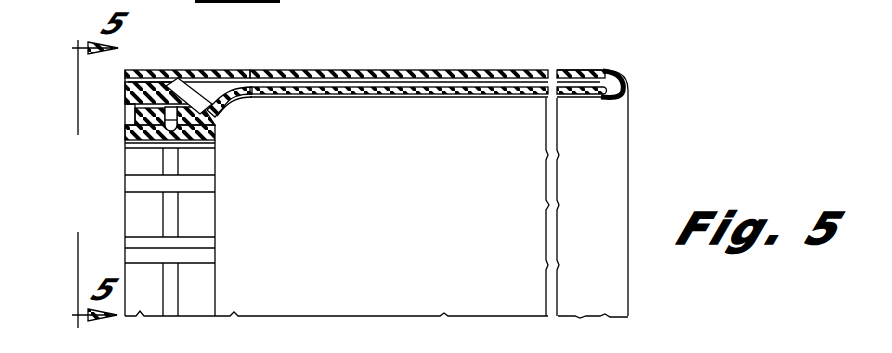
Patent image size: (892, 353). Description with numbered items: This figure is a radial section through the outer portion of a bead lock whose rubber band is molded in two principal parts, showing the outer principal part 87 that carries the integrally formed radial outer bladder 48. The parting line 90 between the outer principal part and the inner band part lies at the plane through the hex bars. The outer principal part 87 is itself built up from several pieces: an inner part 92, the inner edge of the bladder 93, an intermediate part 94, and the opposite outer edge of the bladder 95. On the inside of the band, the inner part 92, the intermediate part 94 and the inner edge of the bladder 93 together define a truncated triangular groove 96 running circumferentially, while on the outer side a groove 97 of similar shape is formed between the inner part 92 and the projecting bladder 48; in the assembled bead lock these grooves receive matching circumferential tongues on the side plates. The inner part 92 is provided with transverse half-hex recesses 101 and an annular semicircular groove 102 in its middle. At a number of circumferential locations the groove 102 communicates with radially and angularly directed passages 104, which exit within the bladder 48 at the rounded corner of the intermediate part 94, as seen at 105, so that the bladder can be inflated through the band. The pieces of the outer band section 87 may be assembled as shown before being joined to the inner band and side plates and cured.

The radial outer bladder 48 is at (423, 60).
The outer principal part 87 is at (164, 58).
The parting line 90 is at (197, 138).
The inner part 92 is at (217, 133).
The inner edge of the bladder 93 is at (137, 115).
The intermediate part 94 is at (127, 96).
The outer edge of the bladder 95 is at (128, 75).
The truncated triangular groove 96 is at (130, 122).
The groove 97 is at (211, 122).
The transverse half-hex recesses 101 is at (208, 255).
The annular semicircular groove 102 is at (178, 210).
The passages 104 is at (189, 88).
The passage exit 105 is at (216, 84).